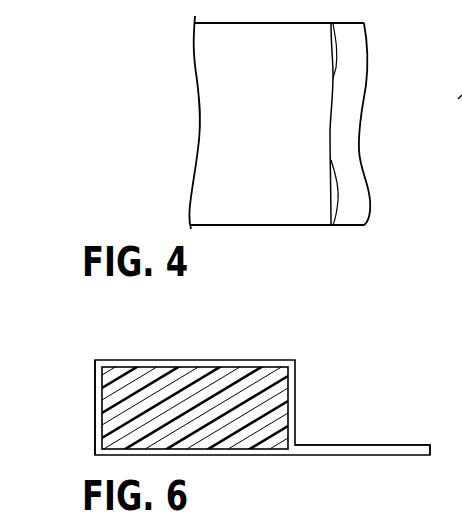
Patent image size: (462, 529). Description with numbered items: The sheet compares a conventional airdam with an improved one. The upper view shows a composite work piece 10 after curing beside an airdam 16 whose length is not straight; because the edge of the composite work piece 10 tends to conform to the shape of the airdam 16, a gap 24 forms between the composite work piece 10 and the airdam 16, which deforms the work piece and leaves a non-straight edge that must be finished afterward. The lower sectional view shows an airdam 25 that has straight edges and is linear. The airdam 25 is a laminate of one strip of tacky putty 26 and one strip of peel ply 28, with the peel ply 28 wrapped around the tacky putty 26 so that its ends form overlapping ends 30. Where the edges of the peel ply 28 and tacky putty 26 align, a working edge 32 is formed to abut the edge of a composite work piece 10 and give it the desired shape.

In FIG. 4, the composite work piece 10 is at (217, 80).
In FIG. 4, the gap 24 is at (338, 52).
In FIG. 4, the airdam 16 is at (360, 105).
In FIG. 6, the airdam 25 is at (303, 353).
In FIG. 6, the tacky putty 26 is at (192, 385).
In FIG. 6, the peel ply 28 is at (255, 368).
In FIG. 6, the overlapping ends 30 is at (363, 442).
In FIG. 6, the working edge 32 is at (95, 395).